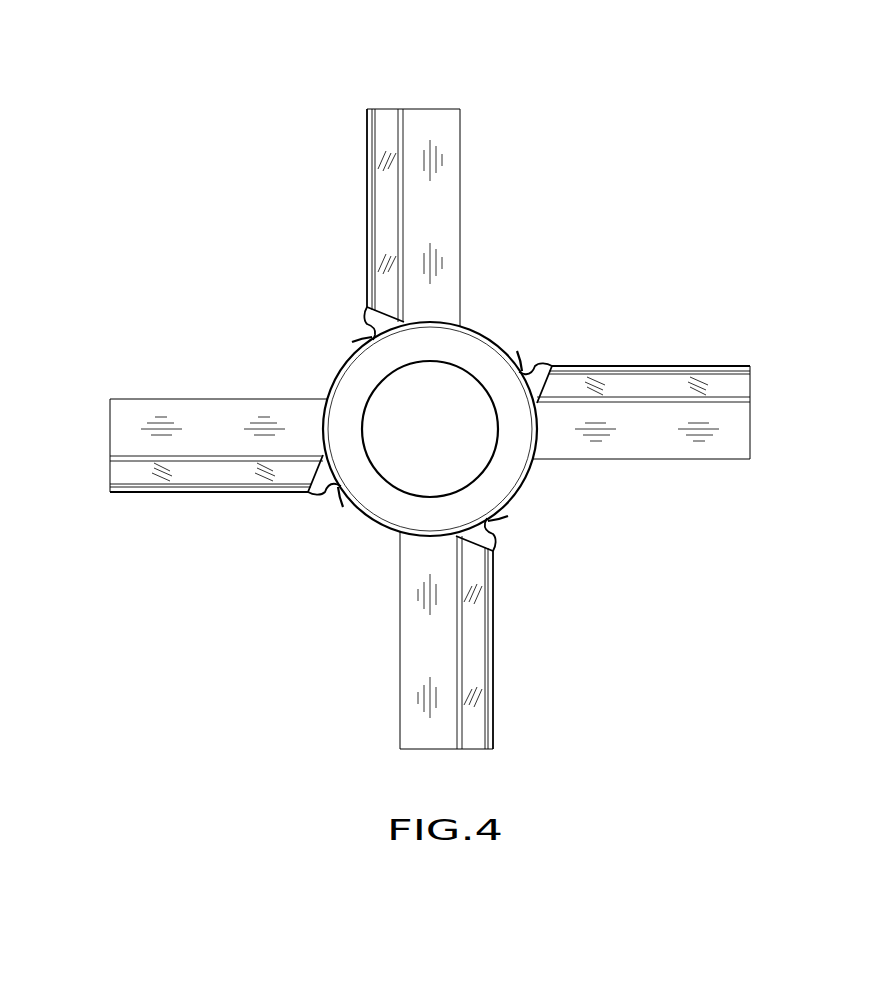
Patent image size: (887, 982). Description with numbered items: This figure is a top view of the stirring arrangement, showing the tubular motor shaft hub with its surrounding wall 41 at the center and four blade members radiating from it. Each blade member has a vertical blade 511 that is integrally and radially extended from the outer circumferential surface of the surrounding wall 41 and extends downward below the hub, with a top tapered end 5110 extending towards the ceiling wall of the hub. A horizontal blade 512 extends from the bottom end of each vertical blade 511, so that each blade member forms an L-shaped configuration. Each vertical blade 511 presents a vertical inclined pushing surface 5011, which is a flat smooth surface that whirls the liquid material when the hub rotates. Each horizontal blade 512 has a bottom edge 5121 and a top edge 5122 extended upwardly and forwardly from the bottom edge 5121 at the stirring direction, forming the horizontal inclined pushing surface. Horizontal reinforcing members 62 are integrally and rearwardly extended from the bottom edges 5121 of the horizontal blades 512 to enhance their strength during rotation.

The surrounding wall 41 is at (468, 353).
The vertical inclined pushing surface 5011 is at (529, 365).
The vertical blade 511 is at (367, 228).
The top tapered end 5110 is at (366, 307).
The horizontal blade 512 is at (727, 385).
The bottom edge 5121 is at (396, 141).
The top edge 5122 is at (365, 175).
The horizontal reinforcing member 62 is at (445, 198).